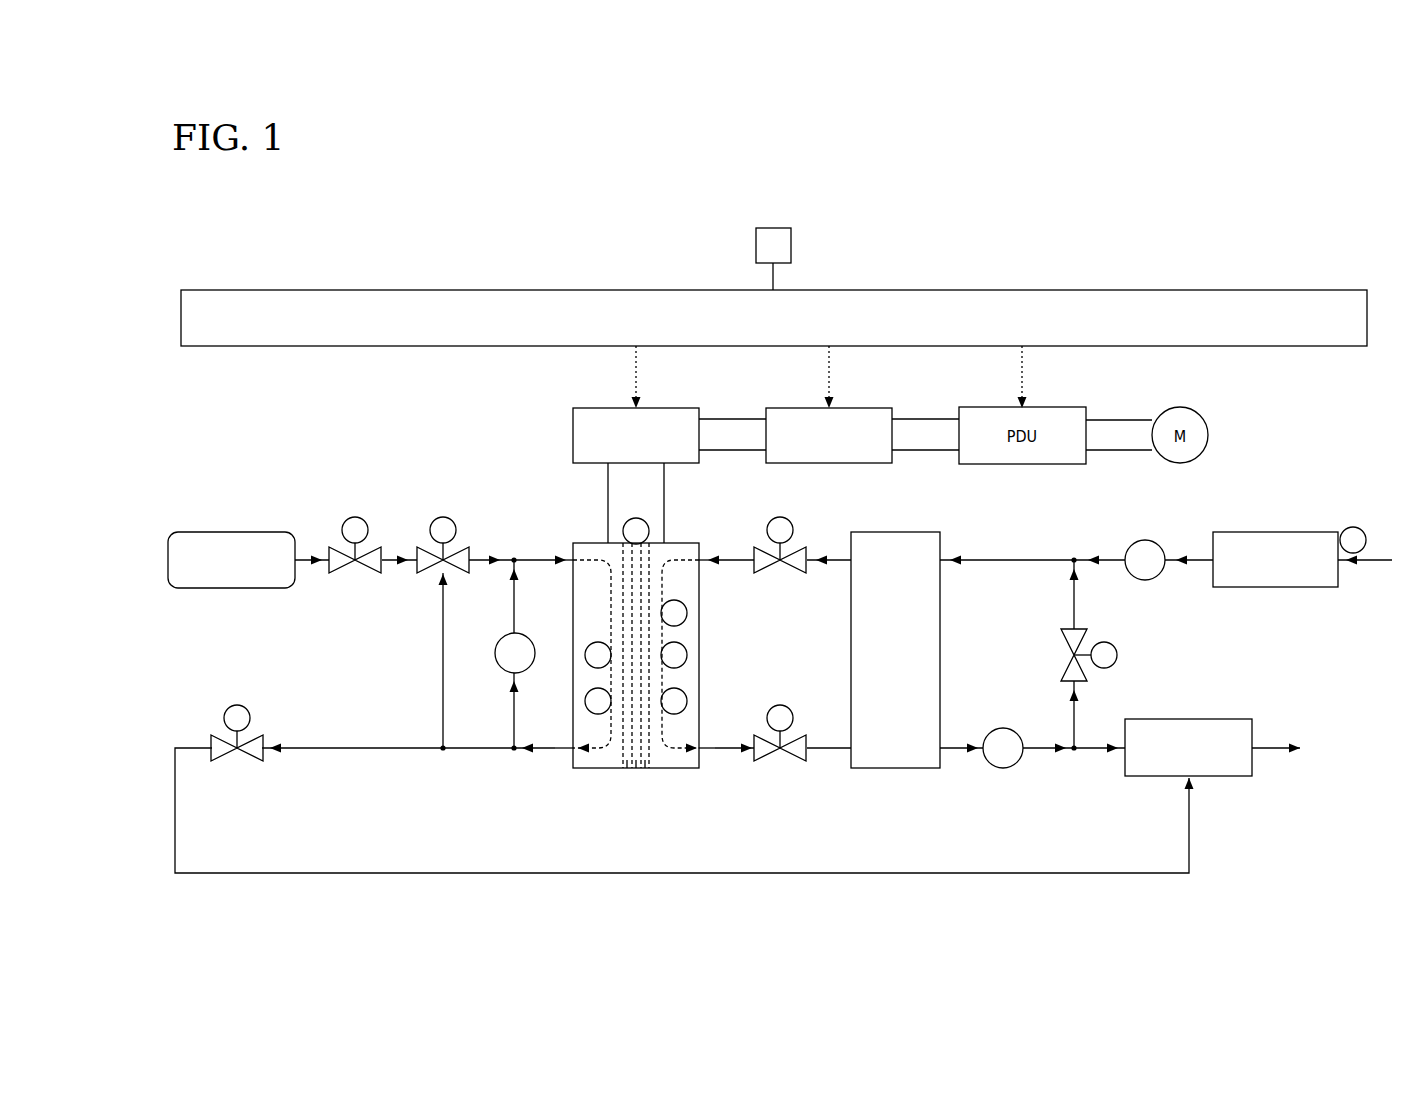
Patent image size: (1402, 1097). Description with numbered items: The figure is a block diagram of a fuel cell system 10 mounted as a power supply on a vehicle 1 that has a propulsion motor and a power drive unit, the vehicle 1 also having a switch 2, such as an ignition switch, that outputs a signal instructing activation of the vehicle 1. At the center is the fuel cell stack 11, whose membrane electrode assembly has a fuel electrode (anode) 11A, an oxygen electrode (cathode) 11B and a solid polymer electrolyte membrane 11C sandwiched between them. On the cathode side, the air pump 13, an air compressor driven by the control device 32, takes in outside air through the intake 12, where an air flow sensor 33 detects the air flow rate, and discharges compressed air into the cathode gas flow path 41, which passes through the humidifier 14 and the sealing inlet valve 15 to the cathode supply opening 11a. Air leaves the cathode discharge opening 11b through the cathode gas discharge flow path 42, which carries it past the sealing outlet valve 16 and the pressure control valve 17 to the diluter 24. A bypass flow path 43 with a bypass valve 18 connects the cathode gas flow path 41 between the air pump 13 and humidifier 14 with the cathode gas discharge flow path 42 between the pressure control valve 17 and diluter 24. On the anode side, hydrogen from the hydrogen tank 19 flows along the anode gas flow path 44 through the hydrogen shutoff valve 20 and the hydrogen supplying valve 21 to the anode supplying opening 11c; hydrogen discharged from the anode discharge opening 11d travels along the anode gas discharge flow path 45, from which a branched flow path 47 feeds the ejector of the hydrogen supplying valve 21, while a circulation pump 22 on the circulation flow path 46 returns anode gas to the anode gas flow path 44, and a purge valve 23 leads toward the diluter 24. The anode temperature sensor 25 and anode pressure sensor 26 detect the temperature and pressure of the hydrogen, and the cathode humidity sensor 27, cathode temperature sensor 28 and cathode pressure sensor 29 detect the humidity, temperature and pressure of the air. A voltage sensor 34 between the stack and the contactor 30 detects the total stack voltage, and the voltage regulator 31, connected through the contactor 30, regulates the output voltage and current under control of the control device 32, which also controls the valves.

The vehicle 1 is at (1306, 181).
The switch 2 is at (776, 228).
The fuel cell system 10 is at (1121, 234).
The fuel cell stack 11 is at (592, 543).
The cathode supply opening 11a is at (701, 550).
The cathode discharge opening 11b is at (700, 753).
The anode supplying opening 11c is at (571, 548).
The anode discharge opening 11d is at (573, 753).
The fuel electrode (anode) 11A is at (627, 768).
The oxygen electrode (cathode) 11B is at (645, 768).
The solid polymer electrolyte membrane 11C is at (636, 768).
The intake 12 is at (1282, 532).
The air pump 13 is at (1148, 540).
The humidifier 14 is at (903, 532).
The sealing inlet valve 15 is at (795, 545).
The sealing outlet valve 16 is at (795, 733).
The pressure control valve 17 is at (1005, 728).
The bypass valve 18 is at (1083, 630).
The hydrogen tank 19 is at (232, 532).
The hydrogen shutoff valve 20 is at (368, 547).
The hydrogen supplying valve 21 is at (455, 547).
The circulation pump 22 is at (500, 668).
The purge valve 23 is at (248, 733).
The diluter 24 is at (1193, 719).
The anode temperature sensor 25 is at (584, 650).
The anode pressure sensor 26 is at (584, 704).
The cathode humidity sensor 27 is at (688, 614).
The cathode temperature sensor 28 is at (688, 656).
The cathode pressure sensor 29 is at (688, 702).
The contactor 30 is at (680, 408).
The voltage regulator 31 is at (870, 408).
The control device 32 is at (893, 290).
The air flow sensor 33 is at (1360, 528).
The voltage sensor 34 is at (633, 518).
The cathode gas flow path 41 is at (1110, 558).
The cathode gas discharge flow path 42 is at (1093, 753).
The bypass flow path 43 is at (1074, 605).
The anode gas flow path 44 is at (302, 558).
The anode gas discharge flow path 45 is at (335, 746).
The circulation flow path 46 is at (514, 602).
The branched flow path 47 is at (443, 654).